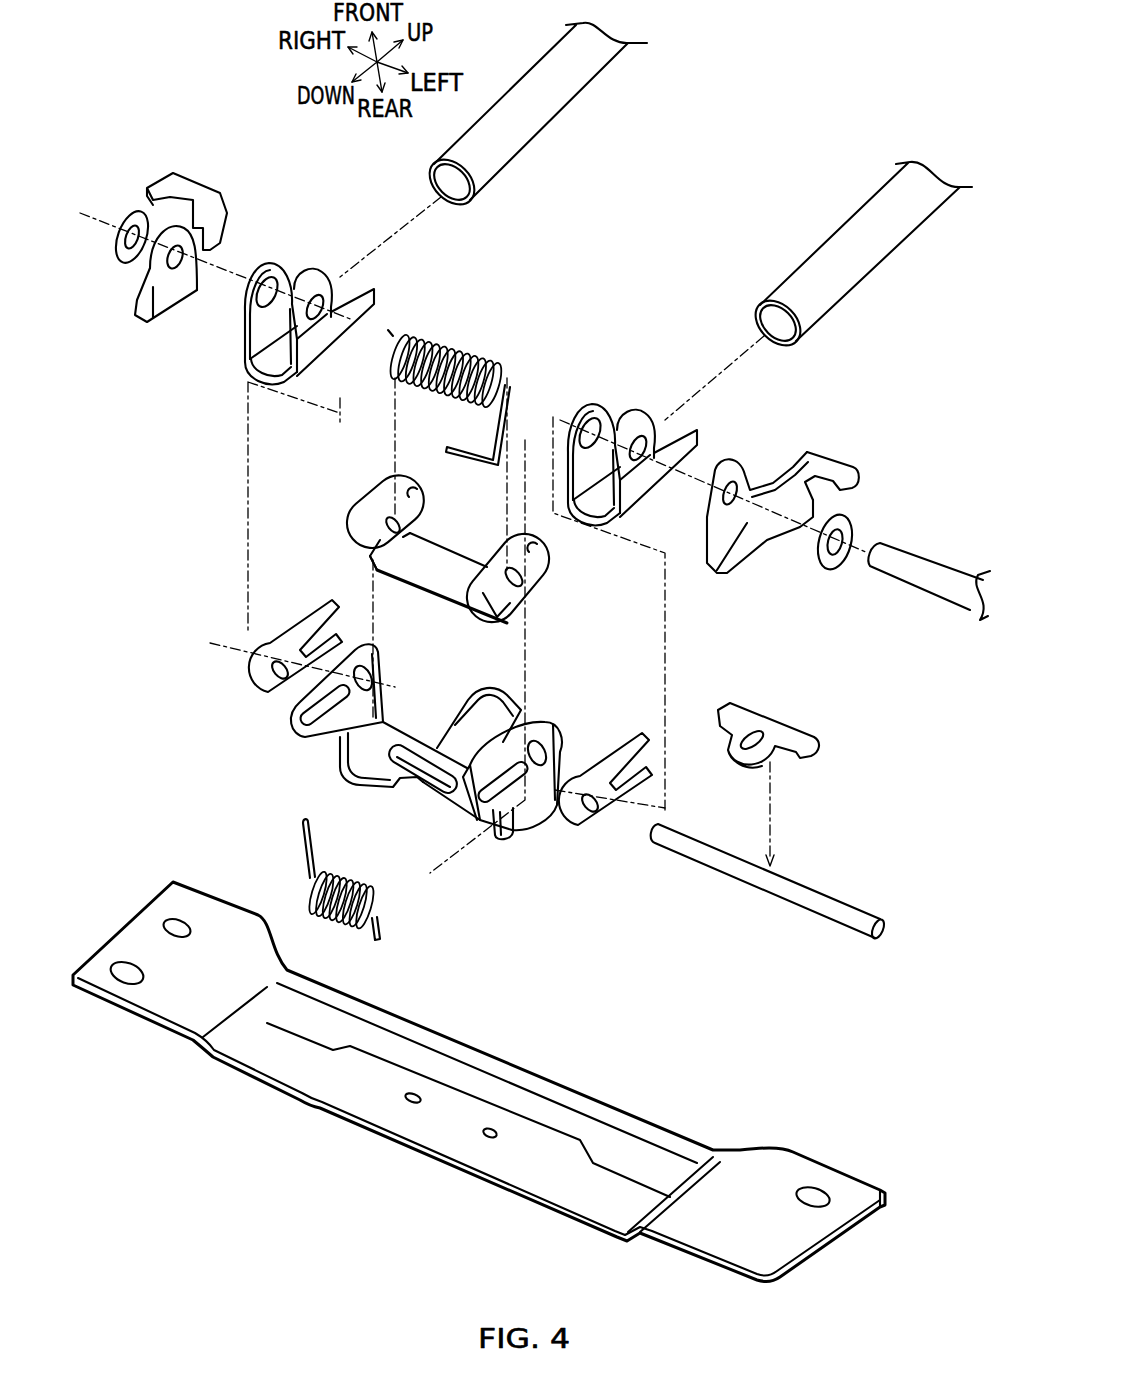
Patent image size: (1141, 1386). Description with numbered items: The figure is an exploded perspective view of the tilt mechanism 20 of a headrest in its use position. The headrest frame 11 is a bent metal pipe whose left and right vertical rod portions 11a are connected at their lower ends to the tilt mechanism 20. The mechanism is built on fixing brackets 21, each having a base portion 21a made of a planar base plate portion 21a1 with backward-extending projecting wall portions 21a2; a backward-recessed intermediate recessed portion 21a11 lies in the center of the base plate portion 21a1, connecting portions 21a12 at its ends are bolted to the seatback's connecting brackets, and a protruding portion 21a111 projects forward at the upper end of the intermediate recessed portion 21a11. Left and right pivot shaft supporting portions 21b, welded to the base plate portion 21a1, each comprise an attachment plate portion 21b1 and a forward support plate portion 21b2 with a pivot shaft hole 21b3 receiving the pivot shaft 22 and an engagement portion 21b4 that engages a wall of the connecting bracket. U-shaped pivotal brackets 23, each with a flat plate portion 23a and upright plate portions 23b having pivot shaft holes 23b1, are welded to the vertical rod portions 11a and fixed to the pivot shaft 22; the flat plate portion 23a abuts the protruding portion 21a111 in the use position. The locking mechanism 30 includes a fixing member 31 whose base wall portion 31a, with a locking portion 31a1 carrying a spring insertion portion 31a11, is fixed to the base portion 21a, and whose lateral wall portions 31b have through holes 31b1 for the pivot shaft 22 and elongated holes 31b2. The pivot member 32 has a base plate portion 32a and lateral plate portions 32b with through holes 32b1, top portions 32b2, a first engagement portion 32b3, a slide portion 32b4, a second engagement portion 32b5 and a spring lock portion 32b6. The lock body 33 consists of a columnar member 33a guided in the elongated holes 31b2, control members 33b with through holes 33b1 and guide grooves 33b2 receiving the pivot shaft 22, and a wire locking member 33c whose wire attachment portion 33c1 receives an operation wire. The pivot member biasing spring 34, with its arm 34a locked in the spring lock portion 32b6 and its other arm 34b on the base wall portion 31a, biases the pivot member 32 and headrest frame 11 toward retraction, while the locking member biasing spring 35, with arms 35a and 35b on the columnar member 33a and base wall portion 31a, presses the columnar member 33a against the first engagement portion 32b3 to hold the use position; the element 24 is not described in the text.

The headrest frame 11 is at (701, 188).
The vertical rod portions 11a is at (696, 188).
The tilt mechanism 20 is at (806, 47).
The fixing brackets 21 is at (523, 689).
The base portion 21a is at (526, 1084).
The base plate portion 21a1 is at (562, 1164).
The intermediate recessed portion 21a11 is at (482, 1098).
The protruding portion 21a111 is at (565, 1055).
The connecting portions 21a12 is at (500, 1101).
The projecting wall portions 21a2 is at (929, 1193).
The pivot shaft supporting portions 21b is at (473, 369).
The attachment plate portion 21b1 is at (444, 437).
The support plate portion 21b2 is at (438, 371).
The pivot shaft hole 21b3 is at (484, 347).
The engagement portion 21b4 is at (512, 296).
The pivot shaft 22 is at (929, 558).
The pivotal brackets 23 is at (448, 387).
The flat plate portion 23a is at (450, 484).
The upright plate portions 23b is at (453, 323).
The pivot shaft holes 23b1 is at (443, 323).
The lock mechanism 24 is at (537, 929).
The locking mechanism 30 is at (516, 780).
The fixing member 31 is at (397, 743).
The base wall portion 31a is at (439, 807).
The locking portion 31a1 is at (476, 866).
The spring insertion portion 31a11 is at (418, 805).
The lateral wall portions 31b is at (397, 727).
The through hole 31b1 is at (457, 664).
The elongated hole 31b2 is at (392, 783).
The pivot member 32 is at (446, 550).
The base plate portion 32a is at (438, 600).
The lateral plate portions 32b is at (446, 550).
The through holes 32b1 is at (478, 536).
The top portions 32b2 is at (366, 600).
The first engagement portion 32b3 is at (386, 602).
The slide portion 32b4 is at (404, 500).
The second engagement portion 32b5 is at (484, 477).
The spring lock portion 32b6 is at (523, 540).
The lock body 33 is at (516, 760).
The columnar member 33a is at (769, 880).
The control members 33b is at (393, 750).
The through hole 33b1 is at (412, 771).
The guide groove 33b2 is at (416, 671).
The wire locking member 33c is at (766, 763).
The wire attachment portion 33c1 is at (741, 777).
The pivot member biasing spring 34 is at (445, 360).
The arm 34a is at (401, 295).
The other arm 34b is at (478, 385).
The locking member biasing spring 35 is at (308, 910).
The arm 35a is at (267, 848).
The other arm 35b is at (376, 959).